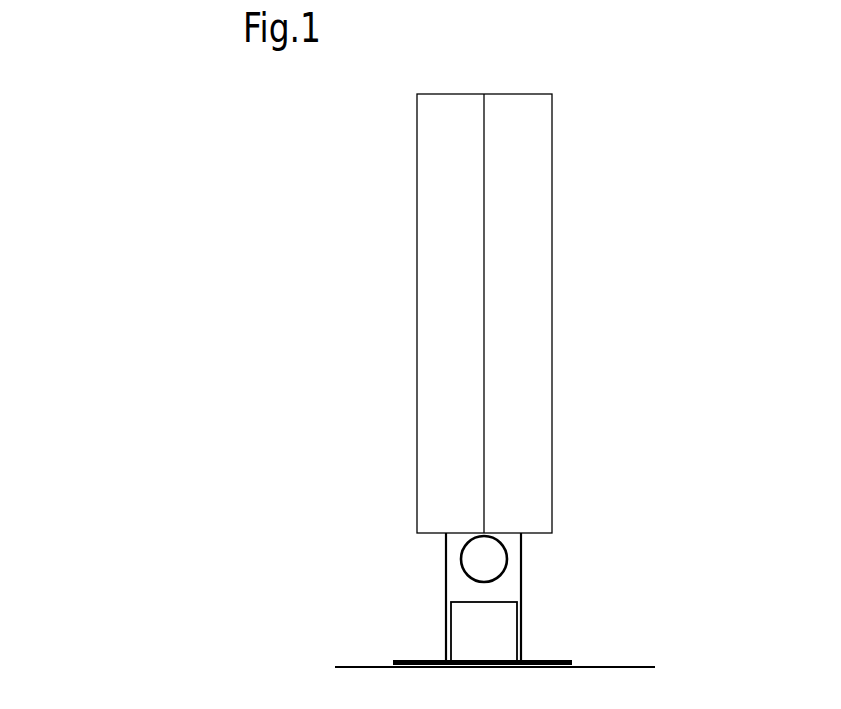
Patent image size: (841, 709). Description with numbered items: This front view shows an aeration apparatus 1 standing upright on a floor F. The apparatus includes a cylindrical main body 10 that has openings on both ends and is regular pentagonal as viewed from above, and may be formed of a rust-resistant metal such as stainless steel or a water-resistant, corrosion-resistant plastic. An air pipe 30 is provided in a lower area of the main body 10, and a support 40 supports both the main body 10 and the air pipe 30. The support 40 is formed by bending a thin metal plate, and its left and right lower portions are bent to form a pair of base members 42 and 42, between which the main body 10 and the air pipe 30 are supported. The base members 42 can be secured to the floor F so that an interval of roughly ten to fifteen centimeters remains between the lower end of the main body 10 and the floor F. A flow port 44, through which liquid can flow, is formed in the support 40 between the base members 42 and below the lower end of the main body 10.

The aeration apparatus 1 is at (652, 235).
The main body 10 is at (552, 375).
The air pipe 30 is at (487, 562).
The support 40 is at (456, 589).
The base members 42 is at (405, 660).
The flow port 44 is at (460, 627).
The floor F is at (640, 666).